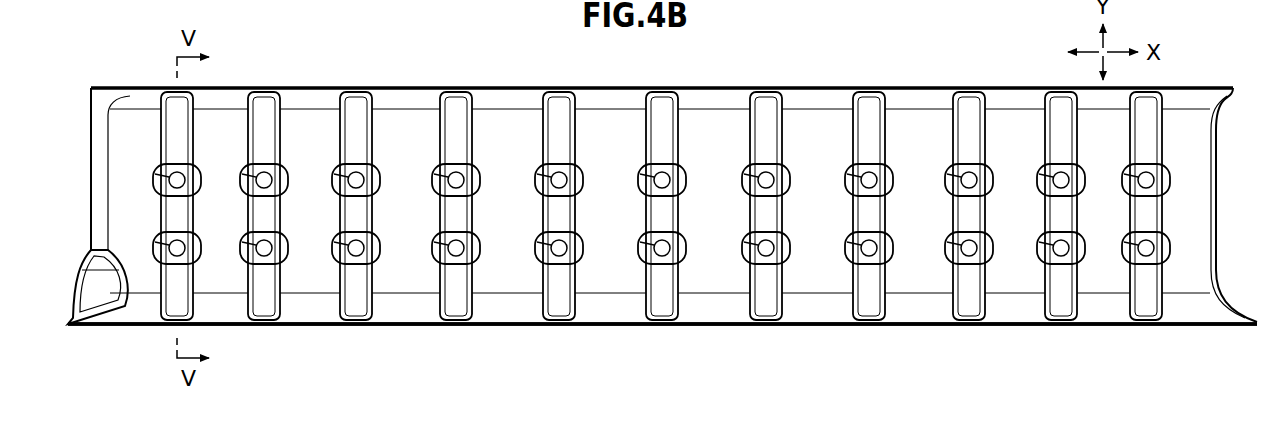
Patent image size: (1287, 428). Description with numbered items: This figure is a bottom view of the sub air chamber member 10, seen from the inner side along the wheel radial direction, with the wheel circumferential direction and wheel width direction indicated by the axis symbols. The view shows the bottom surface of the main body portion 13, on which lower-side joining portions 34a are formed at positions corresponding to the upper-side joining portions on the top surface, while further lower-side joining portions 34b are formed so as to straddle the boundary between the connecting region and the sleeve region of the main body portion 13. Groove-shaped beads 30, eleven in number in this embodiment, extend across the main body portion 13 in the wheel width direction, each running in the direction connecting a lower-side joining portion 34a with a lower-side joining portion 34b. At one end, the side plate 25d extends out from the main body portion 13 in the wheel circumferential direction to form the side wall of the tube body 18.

The sub air chamber member 10 is at (942, 70).
The main body portion 13 is at (140, 123).
The tube body 18 is at (107, 326).
The side plate 25d is at (610, 311).
The beads 30 is at (967, 313).
The lower-side joining portions 34a is at (948, 254).
The lower-side joining portions 34b is at (952, 178).